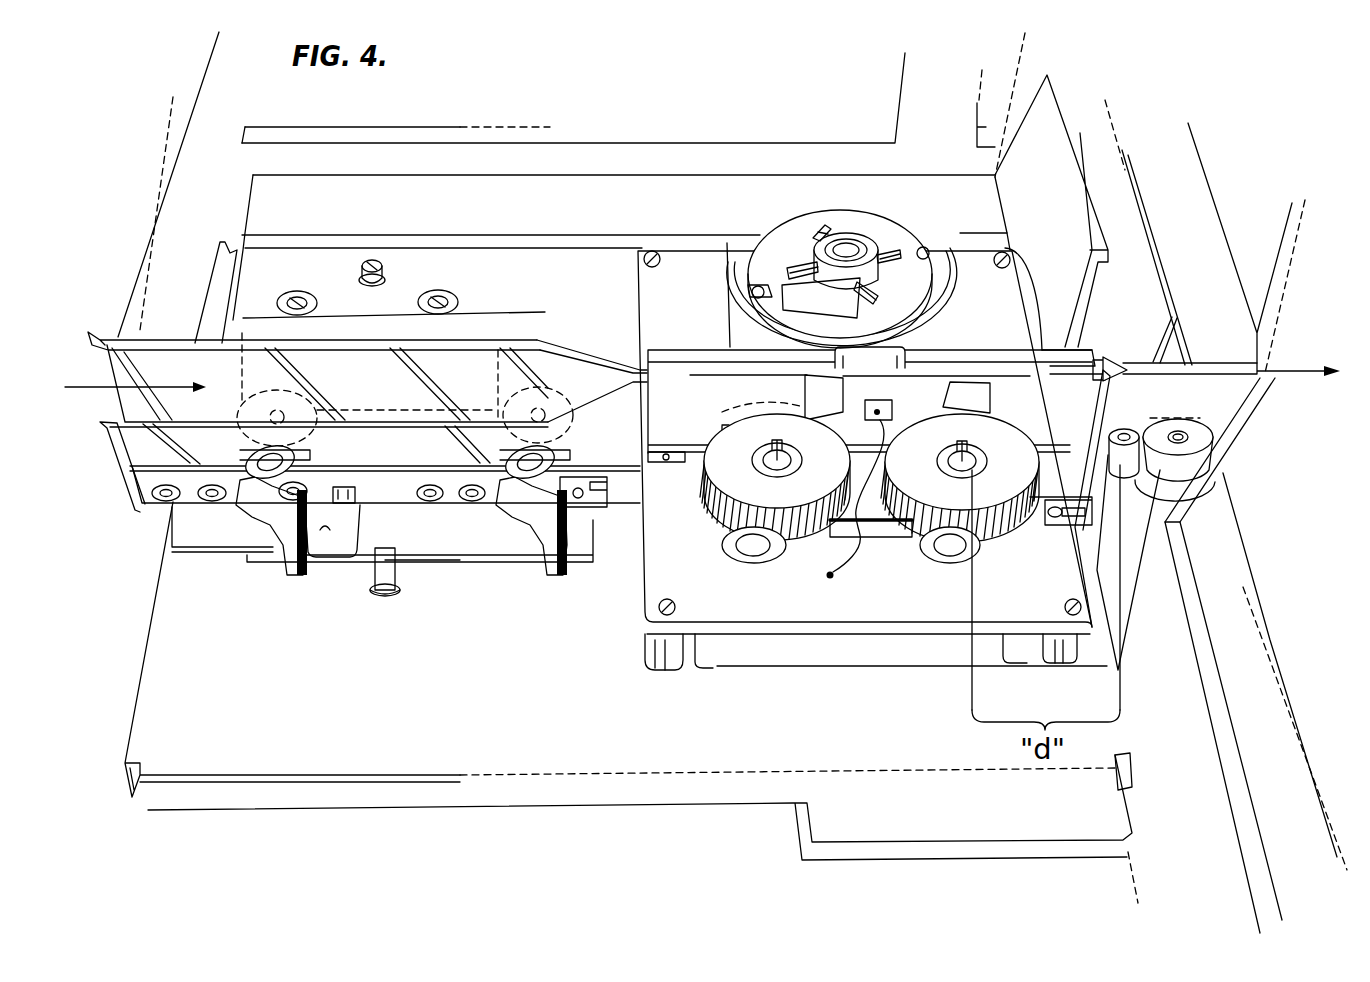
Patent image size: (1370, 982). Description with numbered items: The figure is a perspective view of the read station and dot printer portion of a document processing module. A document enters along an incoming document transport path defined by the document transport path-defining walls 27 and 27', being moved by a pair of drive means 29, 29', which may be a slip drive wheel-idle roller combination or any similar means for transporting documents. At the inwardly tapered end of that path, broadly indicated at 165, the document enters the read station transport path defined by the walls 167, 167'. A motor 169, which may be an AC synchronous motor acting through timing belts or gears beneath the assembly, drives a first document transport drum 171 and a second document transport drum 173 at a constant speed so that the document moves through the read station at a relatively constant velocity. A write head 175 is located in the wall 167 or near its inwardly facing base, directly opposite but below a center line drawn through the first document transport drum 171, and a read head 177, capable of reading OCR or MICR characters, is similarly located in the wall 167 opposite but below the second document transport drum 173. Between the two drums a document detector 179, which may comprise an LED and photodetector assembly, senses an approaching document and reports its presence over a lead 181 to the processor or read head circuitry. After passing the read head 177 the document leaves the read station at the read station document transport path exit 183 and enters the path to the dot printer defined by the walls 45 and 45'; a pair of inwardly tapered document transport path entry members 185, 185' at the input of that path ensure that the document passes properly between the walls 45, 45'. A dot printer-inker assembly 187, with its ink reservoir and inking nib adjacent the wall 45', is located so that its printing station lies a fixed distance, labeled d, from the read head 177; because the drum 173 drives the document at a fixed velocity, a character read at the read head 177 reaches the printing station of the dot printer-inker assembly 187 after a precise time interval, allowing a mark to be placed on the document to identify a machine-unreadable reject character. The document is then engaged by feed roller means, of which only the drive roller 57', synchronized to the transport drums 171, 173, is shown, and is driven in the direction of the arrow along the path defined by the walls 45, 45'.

The document transport path-defining wall 27 is at (352, 445).
The document transport path-defining wall 27' is at (111, 467).
The drive means 29 is at (405, 353).
The drive means 29' is at (403, 501).
The document transport path-defining wall 45 is at (1231, 349).
The document transport path-defining wall 45' is at (1223, 447).
The drive roller 57' is at (1194, 468).
The inwardly tapered end of the transport path 165 is at (618, 368).
The read station transport path wall 167 is at (870, 383).
The read station transport path wall 167' is at (667, 460).
The motor 169 is at (791, 232).
The first document transport drum 171 is at (797, 537).
The second document transport drum 173 is at (1000, 533).
The write head 175 is at (712, 436).
The read head 177 is at (943, 413).
The document detector 179 is at (900, 398).
The lead 181 is at (843, 564).
The read station document transport path exit 183 is at (1095, 360).
The document transport path entry member 185 is at (1124, 338).
The document transport path entry member 185' is at (1105, 520).
The dot printer-inker assembly 187 is at (1093, 533).